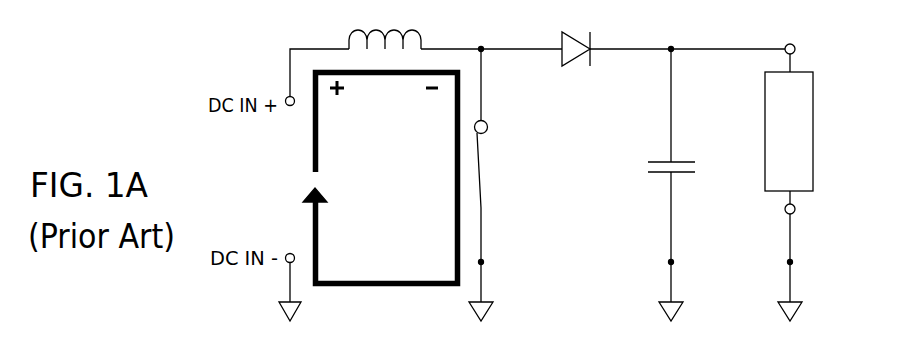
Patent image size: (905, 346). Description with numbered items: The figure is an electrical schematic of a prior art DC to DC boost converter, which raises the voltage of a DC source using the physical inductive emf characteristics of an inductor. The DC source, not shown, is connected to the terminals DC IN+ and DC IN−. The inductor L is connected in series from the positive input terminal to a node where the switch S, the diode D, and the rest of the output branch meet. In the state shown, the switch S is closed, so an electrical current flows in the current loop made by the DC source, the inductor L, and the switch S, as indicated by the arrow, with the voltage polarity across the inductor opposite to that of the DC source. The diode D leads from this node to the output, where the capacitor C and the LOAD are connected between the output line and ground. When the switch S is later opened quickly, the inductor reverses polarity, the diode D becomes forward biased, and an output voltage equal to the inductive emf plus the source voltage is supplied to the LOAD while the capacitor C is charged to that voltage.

The inductor L is at (385, 24).
The switch S is at (490, 185).
The diode D is at (565, 42).
The capacitor C is at (670, 185).
The load LOAD is at (789, 182).